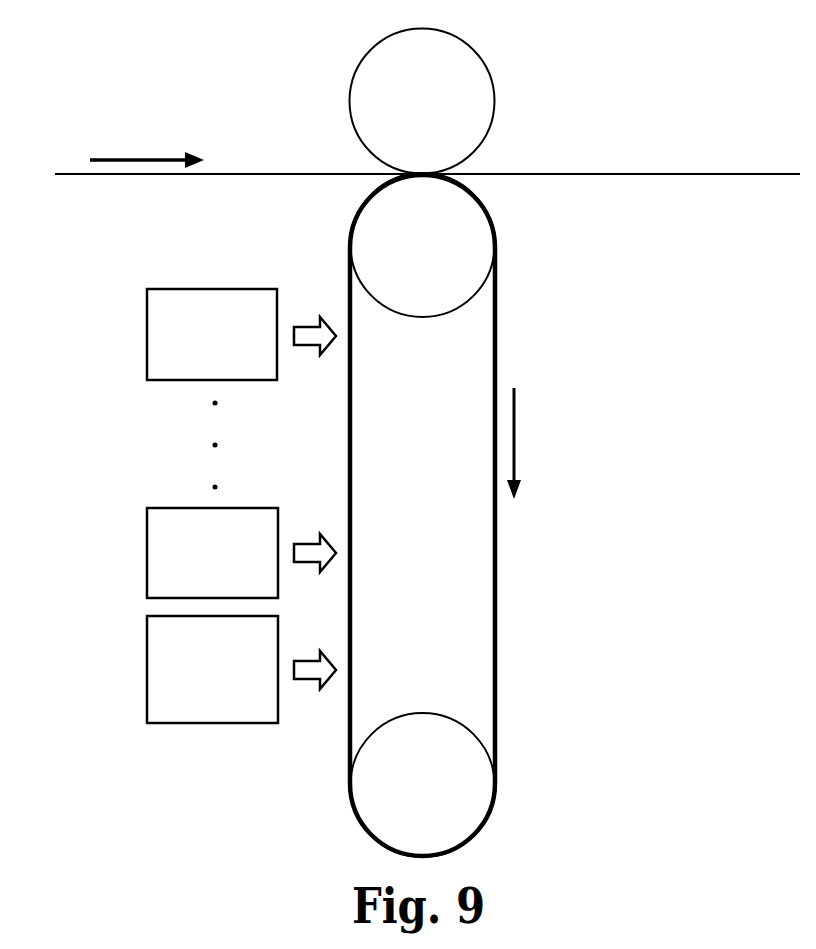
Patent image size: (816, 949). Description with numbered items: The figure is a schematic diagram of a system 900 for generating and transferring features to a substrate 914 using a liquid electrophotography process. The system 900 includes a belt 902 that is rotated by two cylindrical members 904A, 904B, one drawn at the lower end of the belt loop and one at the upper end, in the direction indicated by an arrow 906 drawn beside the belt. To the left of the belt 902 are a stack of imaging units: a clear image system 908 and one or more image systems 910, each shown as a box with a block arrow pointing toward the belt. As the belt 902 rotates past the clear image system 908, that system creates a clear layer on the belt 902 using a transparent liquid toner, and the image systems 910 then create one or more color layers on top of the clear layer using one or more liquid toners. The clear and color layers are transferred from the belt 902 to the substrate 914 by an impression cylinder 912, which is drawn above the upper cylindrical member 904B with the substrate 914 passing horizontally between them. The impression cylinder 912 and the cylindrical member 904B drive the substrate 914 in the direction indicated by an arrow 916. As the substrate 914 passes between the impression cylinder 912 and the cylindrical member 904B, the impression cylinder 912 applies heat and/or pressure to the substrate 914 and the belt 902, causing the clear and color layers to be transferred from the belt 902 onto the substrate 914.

The system 900 is at (118, 842).
The belt 902 is at (497, 738).
The cylindrical member 904A is at (430, 713).
The cylindrical member 904B is at (423, 317).
The arrow 906 is at (516, 428).
The clear image system 908 is at (218, 723).
The image systems 910 is at (130, 290).
The impression cylinder 912 is at (495, 88).
The substrate 914 is at (645, 175).
The arrow 916 is at (137, 160).